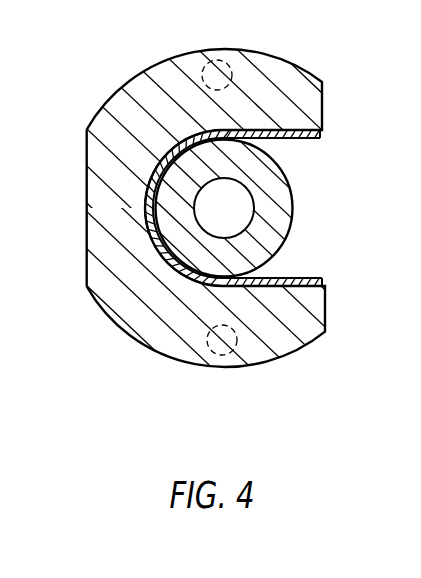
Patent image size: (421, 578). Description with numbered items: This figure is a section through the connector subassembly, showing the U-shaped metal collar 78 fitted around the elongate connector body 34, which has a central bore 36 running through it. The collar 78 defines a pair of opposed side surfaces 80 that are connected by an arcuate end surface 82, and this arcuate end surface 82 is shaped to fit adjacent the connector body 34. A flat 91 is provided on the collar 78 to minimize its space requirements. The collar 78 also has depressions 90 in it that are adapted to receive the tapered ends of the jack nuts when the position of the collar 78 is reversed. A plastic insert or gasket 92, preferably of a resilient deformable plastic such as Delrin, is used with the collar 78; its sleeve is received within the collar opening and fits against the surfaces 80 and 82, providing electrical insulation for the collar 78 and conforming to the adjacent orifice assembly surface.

The connector body 34 is at (292, 193).
The central bore 36 is at (237, 222).
The U-shaped metal collar 78 is at (270, 67).
The opposed side surfaces 80 is at (226, 257).
The arcuate end surface 82 is at (153, 232).
The depressions 90 is at (214, 67).
The flat 91 is at (87, 252).
The plastic insert or gasket 92 is at (318, 274).